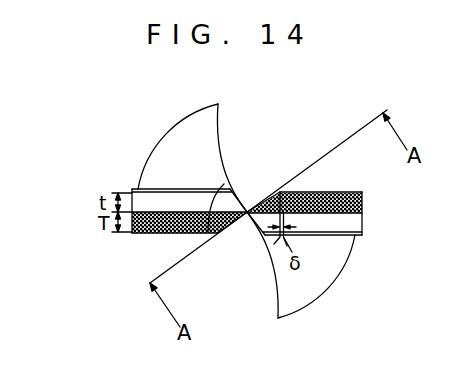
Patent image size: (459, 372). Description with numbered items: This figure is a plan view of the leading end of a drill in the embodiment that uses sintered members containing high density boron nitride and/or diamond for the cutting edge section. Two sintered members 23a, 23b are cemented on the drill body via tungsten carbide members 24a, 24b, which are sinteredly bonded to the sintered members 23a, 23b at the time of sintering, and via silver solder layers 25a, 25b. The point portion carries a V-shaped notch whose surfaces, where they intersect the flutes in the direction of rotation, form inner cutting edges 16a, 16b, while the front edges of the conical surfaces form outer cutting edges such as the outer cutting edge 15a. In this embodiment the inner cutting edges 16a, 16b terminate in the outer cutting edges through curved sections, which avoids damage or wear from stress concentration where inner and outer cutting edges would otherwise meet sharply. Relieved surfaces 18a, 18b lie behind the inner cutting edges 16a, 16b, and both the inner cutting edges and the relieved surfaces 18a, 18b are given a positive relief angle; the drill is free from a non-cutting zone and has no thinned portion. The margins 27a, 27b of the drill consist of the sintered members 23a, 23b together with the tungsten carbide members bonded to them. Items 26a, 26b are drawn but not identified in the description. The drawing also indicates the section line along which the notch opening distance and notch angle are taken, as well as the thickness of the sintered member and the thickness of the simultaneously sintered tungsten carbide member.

The outer cutting edge 15a is at (320, 192).
The inner cutting edge 16a is at (265, 197).
The inner cutting edge 16b is at (228, 236).
The relieved surface 18a is at (258, 228).
The relieved surface 18b is at (230, 206).
The sintered member 23a is at (347, 205).
The sintered member 23b is at (163, 238).
The tungsten carbide member 24a is at (350, 237).
The tungsten carbide member 24b is at (162, 203).
The silver solder layer 25a is at (318, 237).
The silver solder layer 25b is at (183, 190).
The sector-shaped blade body 26a is at (337, 274).
The sector-shaped blade body 26b is at (200, 152).
The margin 27a is at (340, 224).
The margin 27b is at (127, 225).